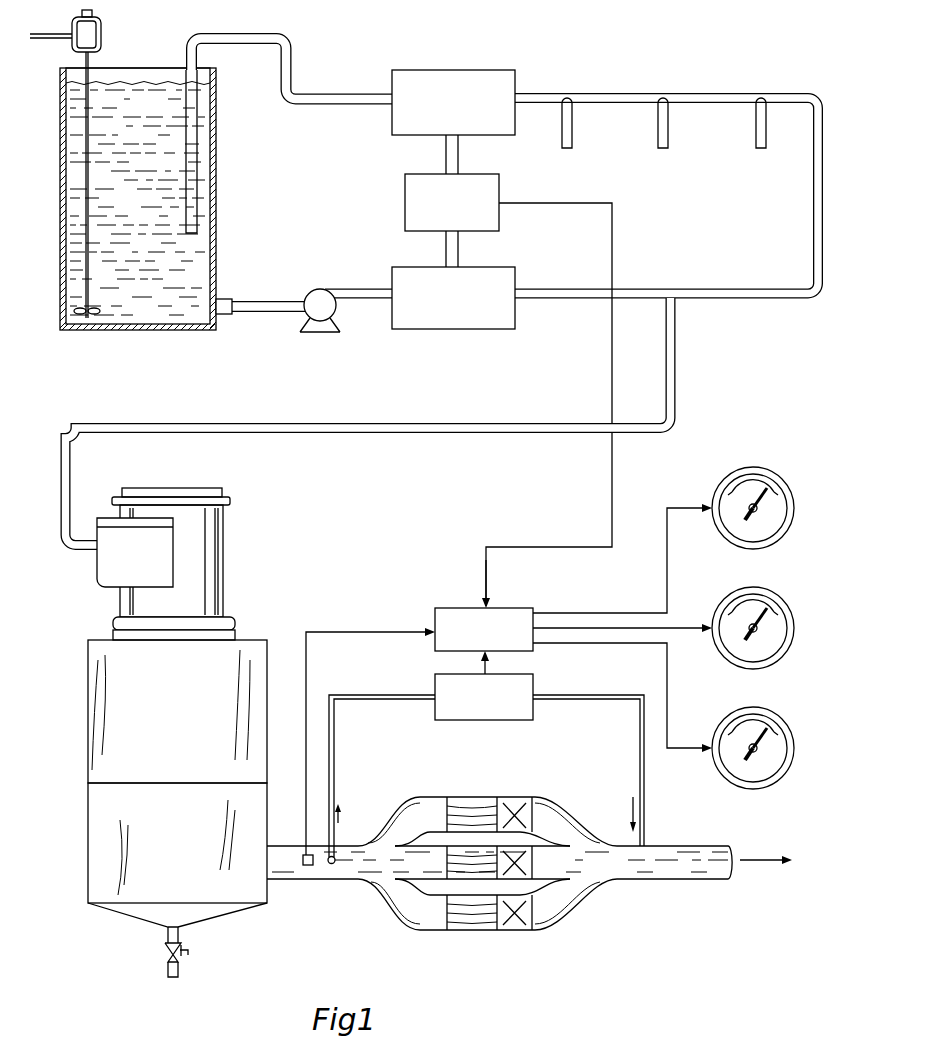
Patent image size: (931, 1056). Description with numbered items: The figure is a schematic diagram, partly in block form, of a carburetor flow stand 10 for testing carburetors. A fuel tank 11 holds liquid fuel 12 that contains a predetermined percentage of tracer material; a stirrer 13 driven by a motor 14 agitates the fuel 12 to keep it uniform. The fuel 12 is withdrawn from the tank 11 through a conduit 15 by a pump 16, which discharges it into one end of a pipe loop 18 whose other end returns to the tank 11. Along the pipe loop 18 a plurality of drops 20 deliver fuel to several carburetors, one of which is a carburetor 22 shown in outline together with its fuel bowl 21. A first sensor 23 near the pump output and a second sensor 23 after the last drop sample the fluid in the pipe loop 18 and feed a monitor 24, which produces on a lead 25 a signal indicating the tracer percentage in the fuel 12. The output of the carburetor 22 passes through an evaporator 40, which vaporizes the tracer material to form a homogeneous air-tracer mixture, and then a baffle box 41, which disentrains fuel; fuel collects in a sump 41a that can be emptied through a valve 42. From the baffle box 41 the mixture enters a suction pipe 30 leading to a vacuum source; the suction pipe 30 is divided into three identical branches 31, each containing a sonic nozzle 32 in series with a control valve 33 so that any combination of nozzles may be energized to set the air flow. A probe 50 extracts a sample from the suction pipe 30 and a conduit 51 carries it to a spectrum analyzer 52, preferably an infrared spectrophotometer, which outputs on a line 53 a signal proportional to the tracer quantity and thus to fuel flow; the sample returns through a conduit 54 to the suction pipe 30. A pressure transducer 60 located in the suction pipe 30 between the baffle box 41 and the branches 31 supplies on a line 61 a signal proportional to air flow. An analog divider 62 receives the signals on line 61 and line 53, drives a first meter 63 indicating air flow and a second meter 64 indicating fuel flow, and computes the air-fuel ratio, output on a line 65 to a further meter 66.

The carburetor flow stand 10 is at (358, 512).
The fuel tank 11 is at (140, 330).
The liquid fuel 12 is at (198, 250).
The stirrer 13 is at (82, 212).
The motor 14 is at (100, 30).
The conduit 15 is at (255, 312).
The pump 16 is at (312, 289).
The pipe loop 18 is at (318, 105).
The drops 20 is at (572, 144).
The fuel bowl 21 is at (115, 574).
The carburetor 22 is at (205, 560).
The sensor 23 is at (512, 79).
The monitor 24 is at (405, 187).
The lead 25 is at (555, 207).
The suction pipe 30 is at (278, 846).
The branches 31 is at (410, 808).
The sonic nozzle 32 is at (470, 797).
The control valve 33 is at (515, 797).
The evaporator 40 is at (98, 708).
The baffle box 41 is at (98, 823).
The sump 41a is at (130, 915).
The valve 42 is at (166, 953).
The probe 50 is at (331, 865).
The conduit 51 is at (340, 702).
The spectrum analyzer 52 is at (480, 720).
The line 53 is at (482, 666).
The conduit 54 is at (590, 702).
The pressure transducer 60 is at (305, 868).
The line 61 is at (307, 667).
The analog divider 62 is at (506, 607).
The first meter 63 is at (787, 508).
The second meter 64 is at (787, 748).
The line 65 is at (590, 632).
The meter 66 is at (787, 628).